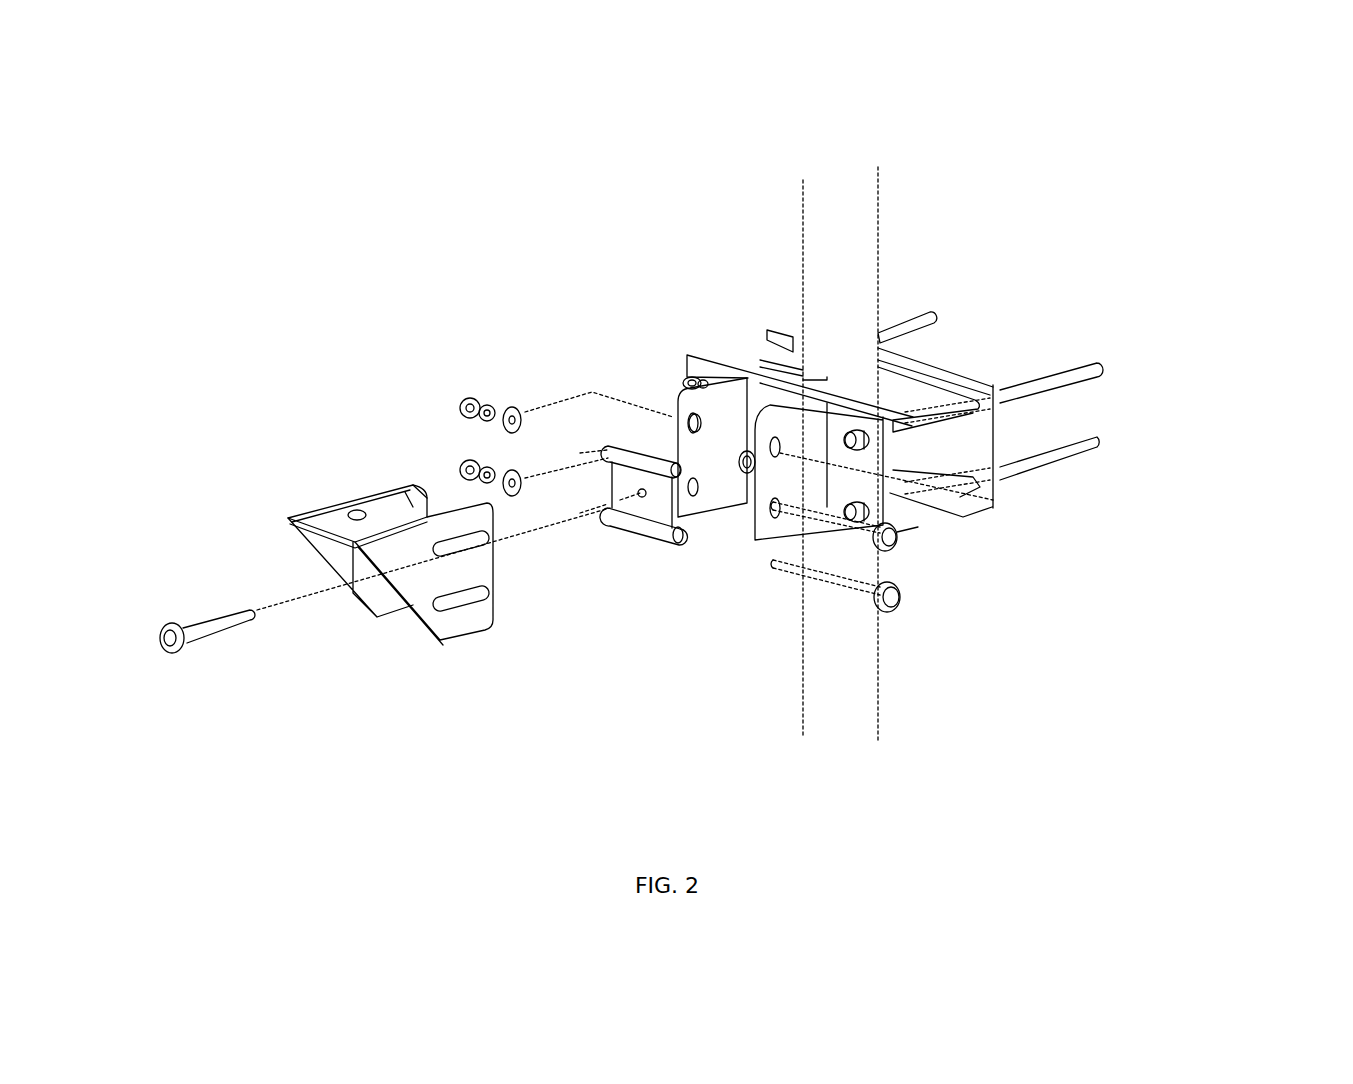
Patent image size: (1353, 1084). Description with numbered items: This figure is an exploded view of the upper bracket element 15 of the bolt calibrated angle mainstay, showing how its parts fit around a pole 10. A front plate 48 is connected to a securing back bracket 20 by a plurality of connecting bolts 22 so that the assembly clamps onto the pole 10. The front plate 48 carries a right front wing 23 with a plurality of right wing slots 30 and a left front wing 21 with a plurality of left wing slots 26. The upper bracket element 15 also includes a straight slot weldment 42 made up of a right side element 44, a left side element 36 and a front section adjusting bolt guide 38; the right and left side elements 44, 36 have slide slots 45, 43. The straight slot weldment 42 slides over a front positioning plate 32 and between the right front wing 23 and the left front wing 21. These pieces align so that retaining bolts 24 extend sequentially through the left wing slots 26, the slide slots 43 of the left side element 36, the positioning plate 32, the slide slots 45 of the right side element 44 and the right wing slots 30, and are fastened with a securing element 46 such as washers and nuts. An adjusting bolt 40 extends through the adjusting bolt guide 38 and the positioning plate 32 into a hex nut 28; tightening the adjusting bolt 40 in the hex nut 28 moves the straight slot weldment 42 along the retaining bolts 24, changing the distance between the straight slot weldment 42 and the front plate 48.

The pole 10 is at (872, 220).
The upper bracket element 15 is at (420, 283).
The securing back bracket 20 is at (941, 378).
The left front wing 21 is at (803, 433).
The connecting bolts 22 is at (1100, 443).
The right front wing 23 is at (717, 405).
The retaining bolts 24 is at (892, 605).
The left wing slots 26 is at (776, 512).
The hex nut 28 is at (747, 470).
The right wing slots 30 is at (693, 432).
The front positioning plate 32 is at (652, 537).
The left side element 36 is at (417, 570).
The front section adjusting bolt guide 38 is at (375, 598).
The adjusting bolt 40 is at (222, 623).
The straight slot weldment 42 is at (330, 508).
The slide slots 43 is at (490, 539).
The right side element 44 is at (427, 513).
The slide slots 45 is at (413, 507).
The securing element 46 is at (460, 397).
The front plate 48 is at (700, 355).